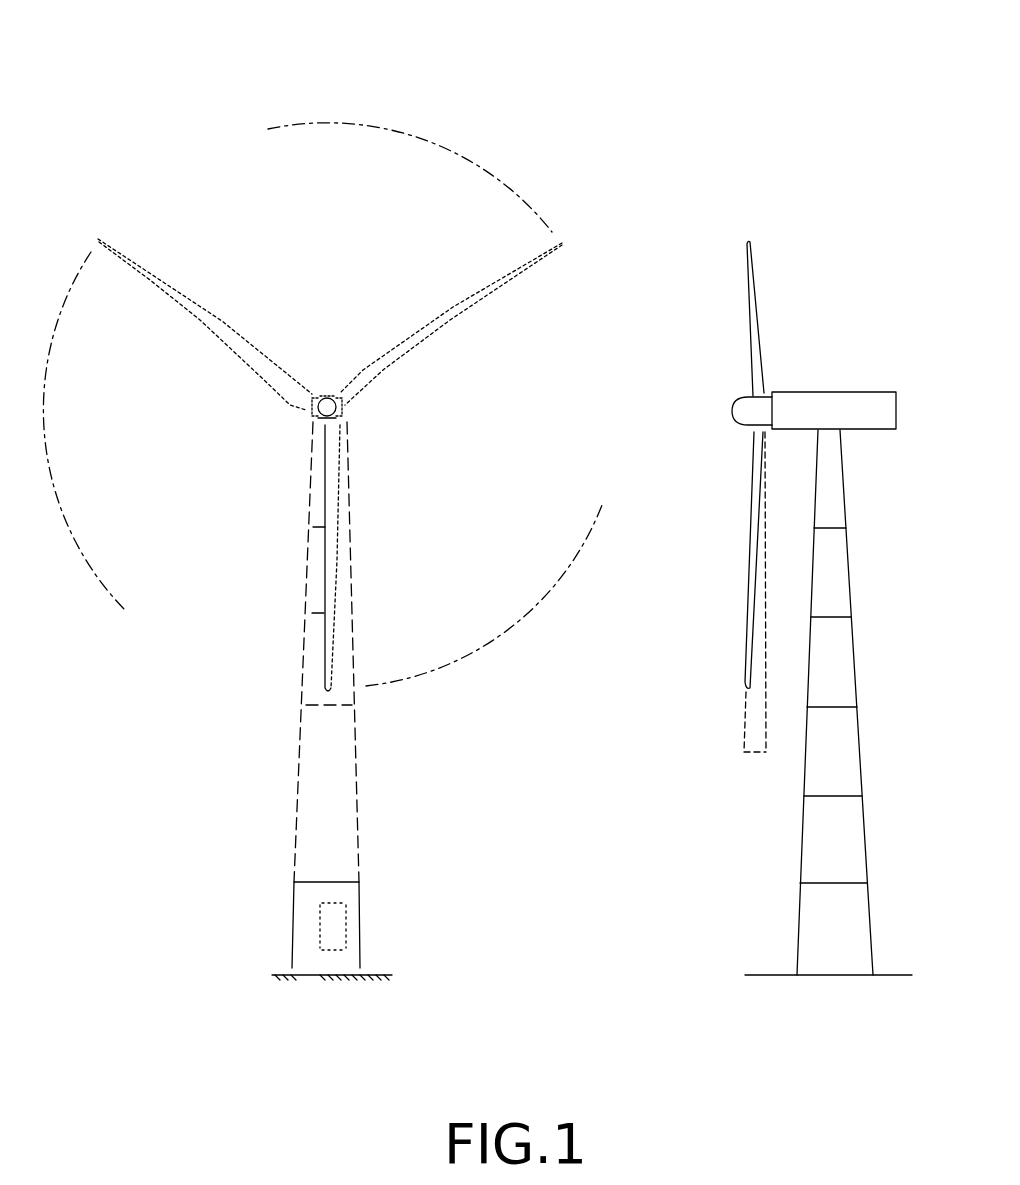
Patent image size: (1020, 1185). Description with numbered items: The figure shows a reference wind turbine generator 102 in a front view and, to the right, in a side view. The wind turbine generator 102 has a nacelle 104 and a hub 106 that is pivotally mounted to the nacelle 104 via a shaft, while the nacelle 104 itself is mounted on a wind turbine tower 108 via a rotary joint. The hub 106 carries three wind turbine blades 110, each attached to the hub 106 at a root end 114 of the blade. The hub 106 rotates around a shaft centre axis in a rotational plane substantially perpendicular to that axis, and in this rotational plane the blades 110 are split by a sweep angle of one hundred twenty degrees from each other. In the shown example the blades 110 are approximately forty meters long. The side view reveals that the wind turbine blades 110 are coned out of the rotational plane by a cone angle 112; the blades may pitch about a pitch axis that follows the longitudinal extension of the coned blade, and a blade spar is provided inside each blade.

The wind turbine generator 102 is at (196, 118).
The nacelle 104 is at (311, 413).
The hub 106 is at (341, 413).
The wind turbine tower 108 is at (347, 745).
The wind turbine blades 110 is at (412, 329).
The cone angle 112 is at (741, 762).
The root end 114 is at (328, 420).